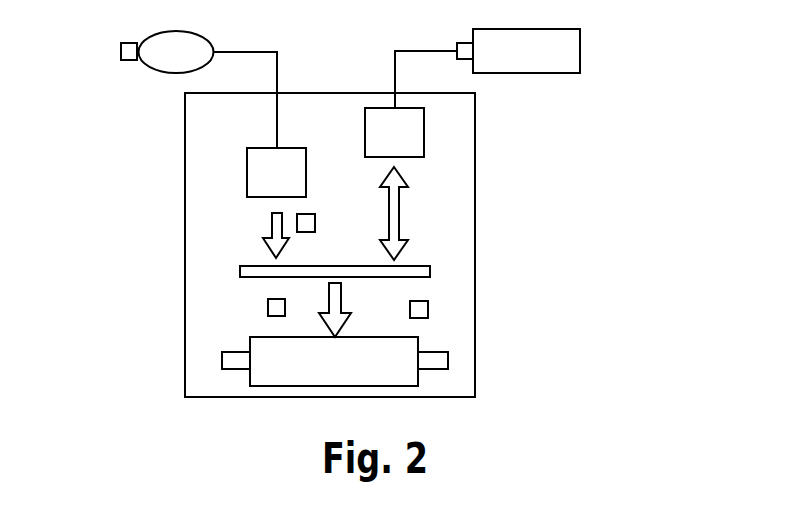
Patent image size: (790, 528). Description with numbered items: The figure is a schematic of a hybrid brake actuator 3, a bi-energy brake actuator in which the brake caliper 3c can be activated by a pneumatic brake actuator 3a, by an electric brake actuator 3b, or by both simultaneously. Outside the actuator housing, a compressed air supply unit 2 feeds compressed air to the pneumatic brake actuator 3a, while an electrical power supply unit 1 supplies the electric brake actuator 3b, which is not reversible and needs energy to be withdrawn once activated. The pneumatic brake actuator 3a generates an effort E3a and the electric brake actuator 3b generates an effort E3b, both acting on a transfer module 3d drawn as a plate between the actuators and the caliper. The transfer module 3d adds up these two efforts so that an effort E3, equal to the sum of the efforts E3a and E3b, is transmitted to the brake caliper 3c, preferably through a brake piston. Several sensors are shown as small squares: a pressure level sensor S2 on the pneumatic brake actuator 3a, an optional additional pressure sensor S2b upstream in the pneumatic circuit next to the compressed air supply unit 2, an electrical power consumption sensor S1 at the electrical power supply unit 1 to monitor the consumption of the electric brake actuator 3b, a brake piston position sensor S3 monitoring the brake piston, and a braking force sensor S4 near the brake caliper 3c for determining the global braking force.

The electrical power supply unit 1 is at (524, 59).
The compressed air supply unit 2 is at (181, 63).
The hybrid brake actuator 3 is at (482, 392).
The pneumatic brake actuator 3a is at (263, 184).
The electric brake actuator 3b is at (410, 144).
The brake caliper 3c is at (320, 372).
The transfer module 3d is at (438, 270).
The electrical power consumption sensor S1 is at (462, 43).
The pressure level sensor S2 is at (316, 222).
The additional pressure sensor S2b is at (127, 61).
The brake piston position sensor S3 is at (429, 310).
The braking force sensor S4 is at (268, 305).
The effort transmitted to the brake caliper E3 is at (340, 333).
The effort of the pneumatic brake actuator E3a is at (272, 232).
The effort of the electric brake actuator E3b is at (398, 218).